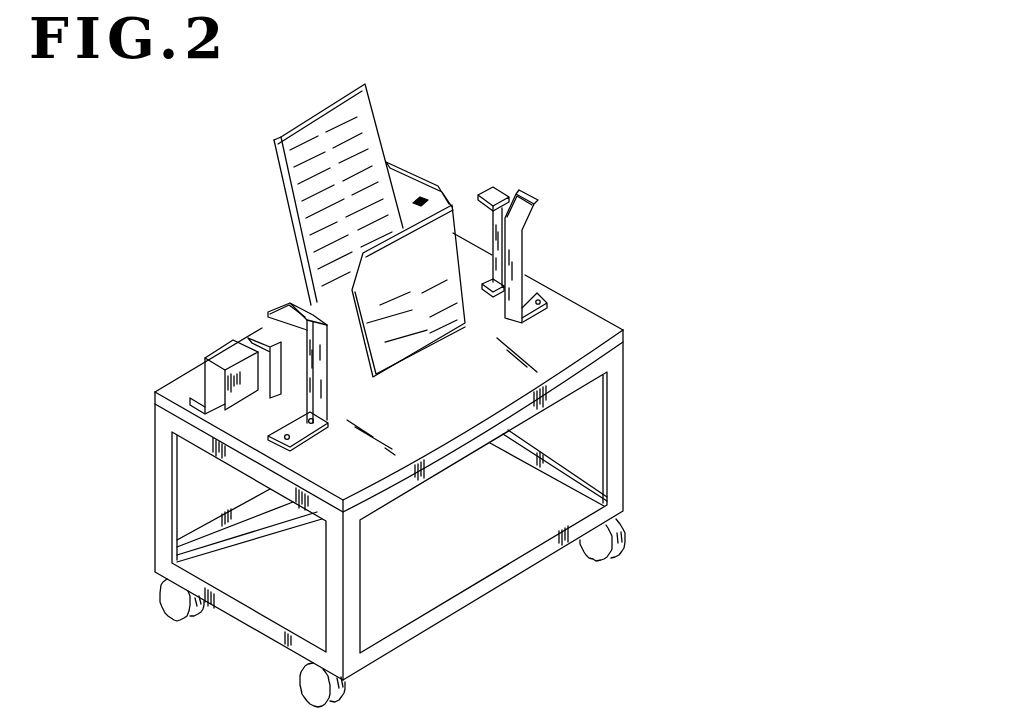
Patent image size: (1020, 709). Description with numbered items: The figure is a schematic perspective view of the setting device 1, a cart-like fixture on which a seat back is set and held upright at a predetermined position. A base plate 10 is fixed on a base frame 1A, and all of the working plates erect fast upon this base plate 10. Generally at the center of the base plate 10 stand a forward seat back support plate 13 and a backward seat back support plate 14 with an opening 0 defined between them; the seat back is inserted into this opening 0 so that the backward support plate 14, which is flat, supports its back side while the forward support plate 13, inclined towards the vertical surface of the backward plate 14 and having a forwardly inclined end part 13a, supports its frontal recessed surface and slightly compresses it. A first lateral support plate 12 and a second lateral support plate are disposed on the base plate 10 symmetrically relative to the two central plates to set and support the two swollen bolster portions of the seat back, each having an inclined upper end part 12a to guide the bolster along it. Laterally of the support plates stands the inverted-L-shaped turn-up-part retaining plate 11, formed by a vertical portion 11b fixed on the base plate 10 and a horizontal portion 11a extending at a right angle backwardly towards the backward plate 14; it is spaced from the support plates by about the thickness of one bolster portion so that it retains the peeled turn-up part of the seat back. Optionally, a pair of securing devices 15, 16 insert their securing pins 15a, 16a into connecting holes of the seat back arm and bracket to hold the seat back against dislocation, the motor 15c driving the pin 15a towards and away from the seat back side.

The setting device 1 is at (205, 328).
The base frame 1A is at (627, 448).
The base plate 10 is at (553, 334).
The opening 0 is at (360, 188).
The backward seat back support plate 14 is at (318, 220).
The securing device 16 is at (412, 158).
The securing pin 16a is at (417, 203).
The forward seat back support plate 13 is at (430, 280).
The forwardly inclined end part 13a is at (385, 260).
The turn-up-part retaining plate 11 is at (503, 195).
The horizontal portion 11a is at (494, 187).
The vertical portion 11b is at (492, 236).
The first seat back lateral support plate 12 is at (303, 313).
The inclined upper end part 12a is at (300, 295).
The securing device 15 is at (190, 362).
The securing pin 15a is at (288, 370).
The motor 15c is at (212, 388).